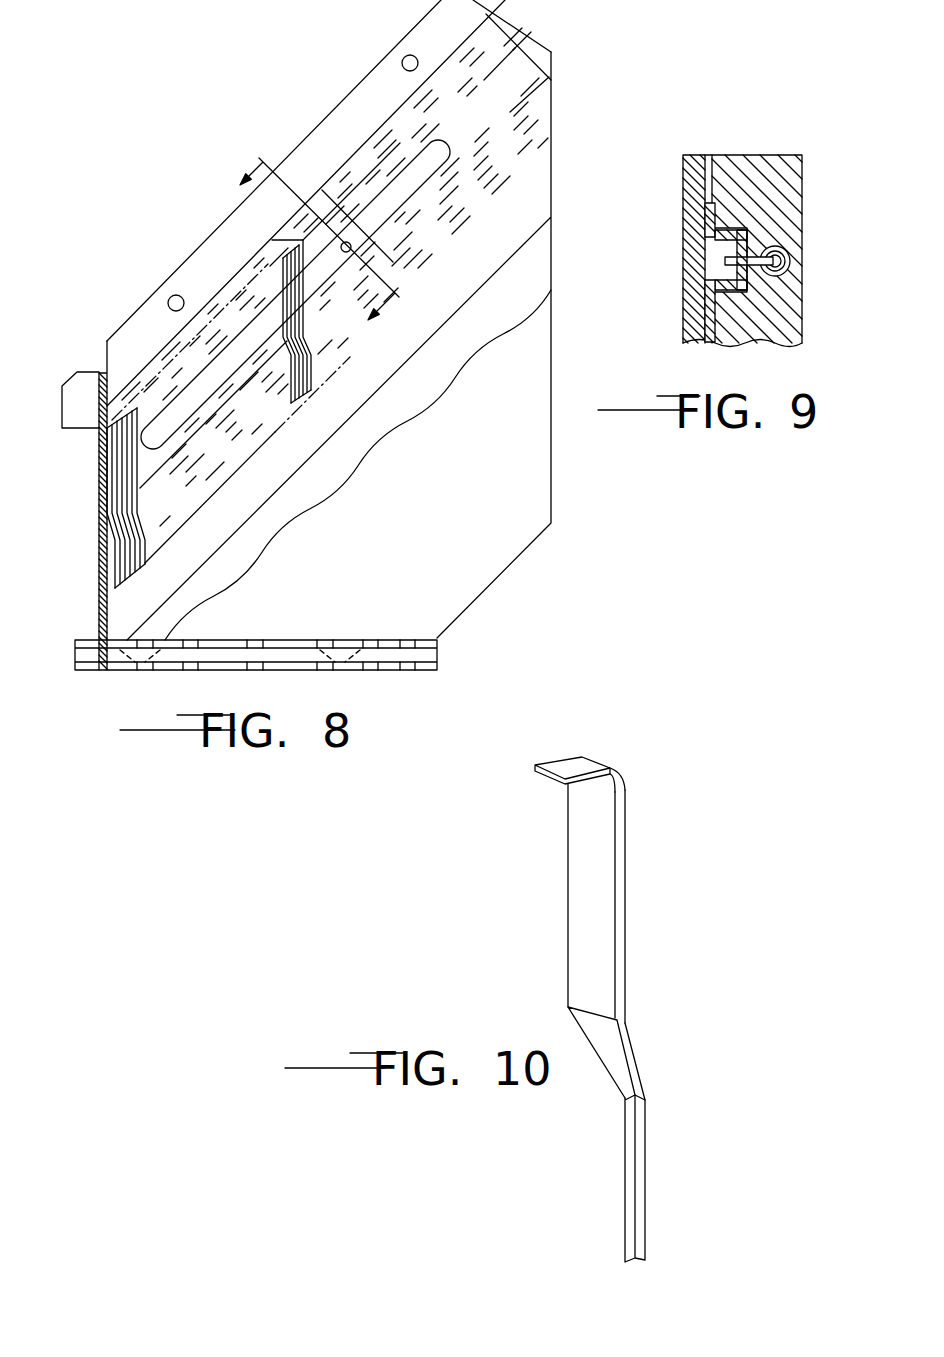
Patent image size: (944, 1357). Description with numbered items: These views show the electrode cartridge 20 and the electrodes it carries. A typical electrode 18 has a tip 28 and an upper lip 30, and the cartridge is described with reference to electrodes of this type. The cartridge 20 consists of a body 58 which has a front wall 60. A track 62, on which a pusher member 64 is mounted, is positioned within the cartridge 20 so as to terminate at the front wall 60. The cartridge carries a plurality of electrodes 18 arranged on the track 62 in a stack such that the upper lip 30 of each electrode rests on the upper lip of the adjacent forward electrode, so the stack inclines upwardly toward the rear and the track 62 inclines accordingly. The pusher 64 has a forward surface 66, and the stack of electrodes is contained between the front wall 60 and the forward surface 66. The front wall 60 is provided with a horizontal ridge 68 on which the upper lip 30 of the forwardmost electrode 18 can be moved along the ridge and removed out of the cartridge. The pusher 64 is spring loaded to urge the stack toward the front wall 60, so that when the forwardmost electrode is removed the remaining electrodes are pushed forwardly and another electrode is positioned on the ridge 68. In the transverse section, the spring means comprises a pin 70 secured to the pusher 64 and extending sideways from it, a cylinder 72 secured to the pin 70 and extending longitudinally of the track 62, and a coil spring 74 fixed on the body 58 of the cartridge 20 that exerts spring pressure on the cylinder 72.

In FIG. 8, the electrode cartridge 20 is at (558, 58).
In FIG. 8, the electrode 18 is at (145, 538).
In FIG. 10, the electrode 18 is at (625, 880).
In FIG. 10, the tip 28 is at (630, 1262).
In FIG. 10, the upper lip 30 is at (578, 766).
In FIG. 8, the body 58 is at (478, 569).
In FIG. 8, the front wall 60 is at (100, 531).
In FIG. 8, the track 62 is at (462, 134).
In FIG. 9, the track 62 is at (723, 332).
In FIG. 8, the pusher member 64 is at (388, 268).
In FIG. 9, the pusher member 64 is at (713, 260).
In FIG. 8, the forward surface 66 is at (298, 322).
In FIG. 8, the horizontal ridge 68 is at (103, 428).
In FIG. 9, the pin 70 is at (753, 248).
In FIG. 9, the cylinder 72 is at (790, 282).
In FIG. 9, the coil spring 74 is at (790, 252).